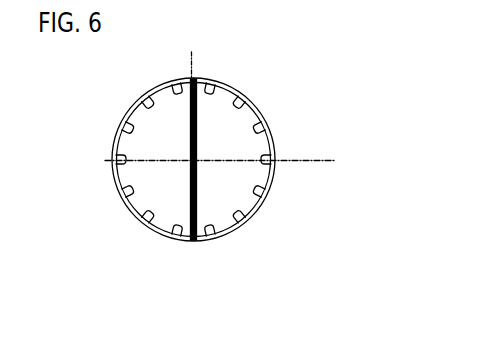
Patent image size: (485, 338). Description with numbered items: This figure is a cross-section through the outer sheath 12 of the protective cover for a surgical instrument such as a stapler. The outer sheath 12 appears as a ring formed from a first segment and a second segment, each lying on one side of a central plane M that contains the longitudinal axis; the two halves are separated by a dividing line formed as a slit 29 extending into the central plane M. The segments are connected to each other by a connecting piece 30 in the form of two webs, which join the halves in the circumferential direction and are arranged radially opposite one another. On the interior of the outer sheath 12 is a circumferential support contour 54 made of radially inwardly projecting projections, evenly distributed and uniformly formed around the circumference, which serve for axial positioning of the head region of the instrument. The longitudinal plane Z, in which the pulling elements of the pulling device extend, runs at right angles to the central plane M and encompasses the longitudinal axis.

The outer sheath 12 is at (123, 108).
The slit 29 is at (187, 118).
The connecting piece 30 is at (190, 76).
The support contour 54 is at (220, 83).
The central plane M is at (204, 62).
The longitudinal plane Z is at (220, 147).